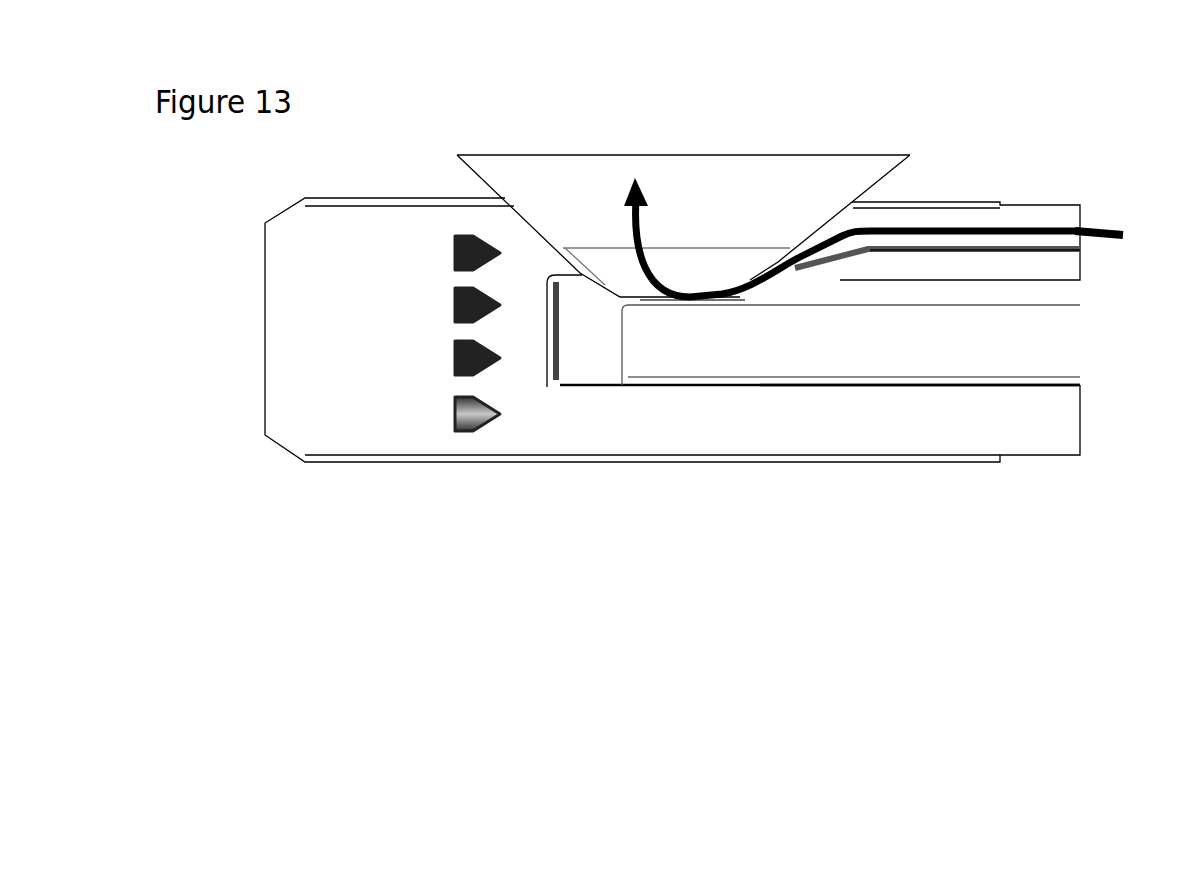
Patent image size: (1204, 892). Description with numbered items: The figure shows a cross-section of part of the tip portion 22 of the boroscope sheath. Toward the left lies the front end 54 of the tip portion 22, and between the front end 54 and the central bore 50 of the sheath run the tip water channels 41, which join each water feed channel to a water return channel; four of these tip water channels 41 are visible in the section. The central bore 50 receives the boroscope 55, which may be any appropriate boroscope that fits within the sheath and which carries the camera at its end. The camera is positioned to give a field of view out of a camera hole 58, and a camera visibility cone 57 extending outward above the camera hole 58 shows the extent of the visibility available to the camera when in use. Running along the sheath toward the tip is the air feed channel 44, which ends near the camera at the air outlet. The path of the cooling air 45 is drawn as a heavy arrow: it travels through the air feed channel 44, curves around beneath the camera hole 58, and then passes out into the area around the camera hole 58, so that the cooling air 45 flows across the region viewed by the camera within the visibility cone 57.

The tip portion 22 is at (410, 100).
The tip water channel 41 is at (458, 238).
The air feed channel 44 is at (1080, 248).
The cooling air 45 is at (643, 240).
The central bore 50 is at (588, 370).
The front end 54 is at (265, 291).
The boroscope 55 is at (800, 367).
The camera visibility cone 57 is at (548, 168).
The camera hole 58 is at (700, 305).